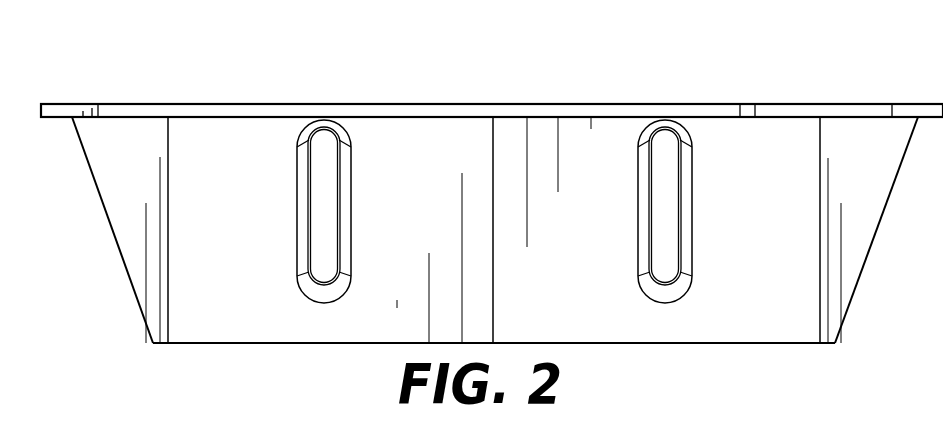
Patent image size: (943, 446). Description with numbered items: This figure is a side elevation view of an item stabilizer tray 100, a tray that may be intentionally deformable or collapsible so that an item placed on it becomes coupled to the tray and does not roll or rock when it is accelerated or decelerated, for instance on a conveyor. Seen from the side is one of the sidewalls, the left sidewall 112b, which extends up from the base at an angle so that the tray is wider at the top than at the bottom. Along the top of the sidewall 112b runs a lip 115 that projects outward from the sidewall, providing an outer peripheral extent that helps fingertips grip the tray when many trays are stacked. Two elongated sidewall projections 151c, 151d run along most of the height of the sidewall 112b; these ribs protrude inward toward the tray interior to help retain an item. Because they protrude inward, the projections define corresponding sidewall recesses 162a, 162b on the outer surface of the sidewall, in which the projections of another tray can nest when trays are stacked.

The item stabilizer tray 100 is at (851, 359).
The lip 115 is at (46, 103).
The sidewall 112b is at (557, 328).
The sidewall projection 151c is at (351, 197).
The sidewall projection 151d is at (692, 197).
The sidewall recess 162a is at (653, 203).
The sidewall recess 162b is at (313, 203).